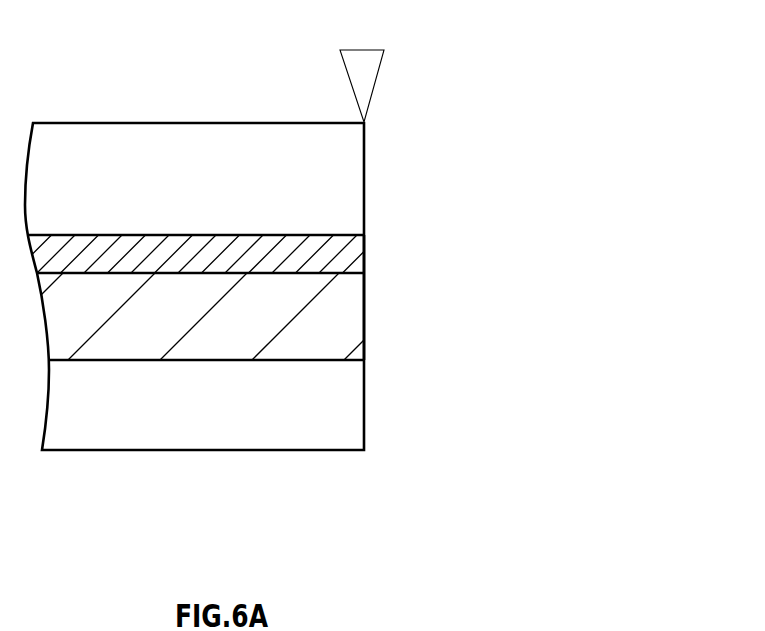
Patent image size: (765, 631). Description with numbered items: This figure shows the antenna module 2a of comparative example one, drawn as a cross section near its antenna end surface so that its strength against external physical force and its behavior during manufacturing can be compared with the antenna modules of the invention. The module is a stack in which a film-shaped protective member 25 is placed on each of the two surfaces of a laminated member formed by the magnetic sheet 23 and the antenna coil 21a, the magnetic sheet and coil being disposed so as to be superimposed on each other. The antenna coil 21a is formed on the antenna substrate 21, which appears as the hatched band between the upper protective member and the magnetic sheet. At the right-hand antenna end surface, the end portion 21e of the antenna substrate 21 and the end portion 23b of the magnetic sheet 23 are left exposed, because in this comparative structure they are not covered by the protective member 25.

The antenna module 2a is at (287, 22).
The film-shaped protective member 25 is at (200, 122).
The antenna substrate 21 is at (352, 248).
The antenna coil 21a is at (202, 254).
The end portion of the antenna substrate 21e is at (364, 253).
The magnetic sheet 23 is at (353, 330).
The end portion of the magnetic sheet 23b is at (364, 316).